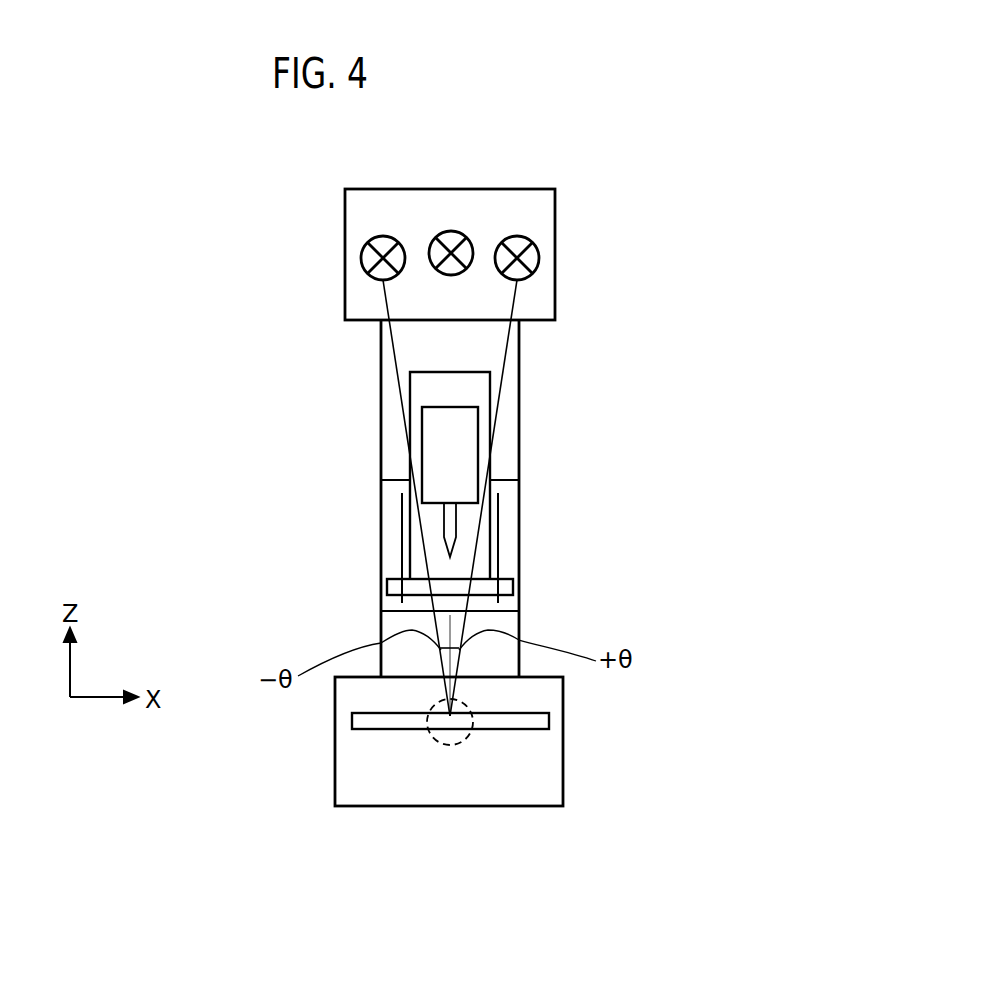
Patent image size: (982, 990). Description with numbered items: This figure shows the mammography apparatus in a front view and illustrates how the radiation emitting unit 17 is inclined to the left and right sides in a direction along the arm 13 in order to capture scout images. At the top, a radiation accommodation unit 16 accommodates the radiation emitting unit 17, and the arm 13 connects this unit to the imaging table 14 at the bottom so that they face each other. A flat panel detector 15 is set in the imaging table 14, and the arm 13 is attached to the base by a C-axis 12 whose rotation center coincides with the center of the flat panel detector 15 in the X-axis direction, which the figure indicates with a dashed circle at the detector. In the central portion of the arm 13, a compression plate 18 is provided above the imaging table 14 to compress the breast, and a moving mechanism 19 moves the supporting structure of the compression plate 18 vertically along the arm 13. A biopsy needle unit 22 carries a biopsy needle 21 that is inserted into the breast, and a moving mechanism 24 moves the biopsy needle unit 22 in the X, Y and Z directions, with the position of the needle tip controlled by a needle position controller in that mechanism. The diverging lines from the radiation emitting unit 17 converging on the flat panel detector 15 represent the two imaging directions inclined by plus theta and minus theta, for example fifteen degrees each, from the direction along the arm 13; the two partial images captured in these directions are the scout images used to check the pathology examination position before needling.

The C-axis 12 is at (452, 746).
The arm 13 is at (519, 473).
The imaging table 14 is at (563, 778).
The flat panel detector 15 is at (540, 720).
The radiation accommodation unit 16 is at (394, 188).
The radiation emitting unit 17 is at (379, 238).
The compression plate 18 is at (513, 586).
The moving mechanism 19 is at (381, 512).
The biopsy needle 21 is at (456, 518).
The biopsy needle unit 22 is at (458, 407).
The moving mechanism 24 is at (410, 388).